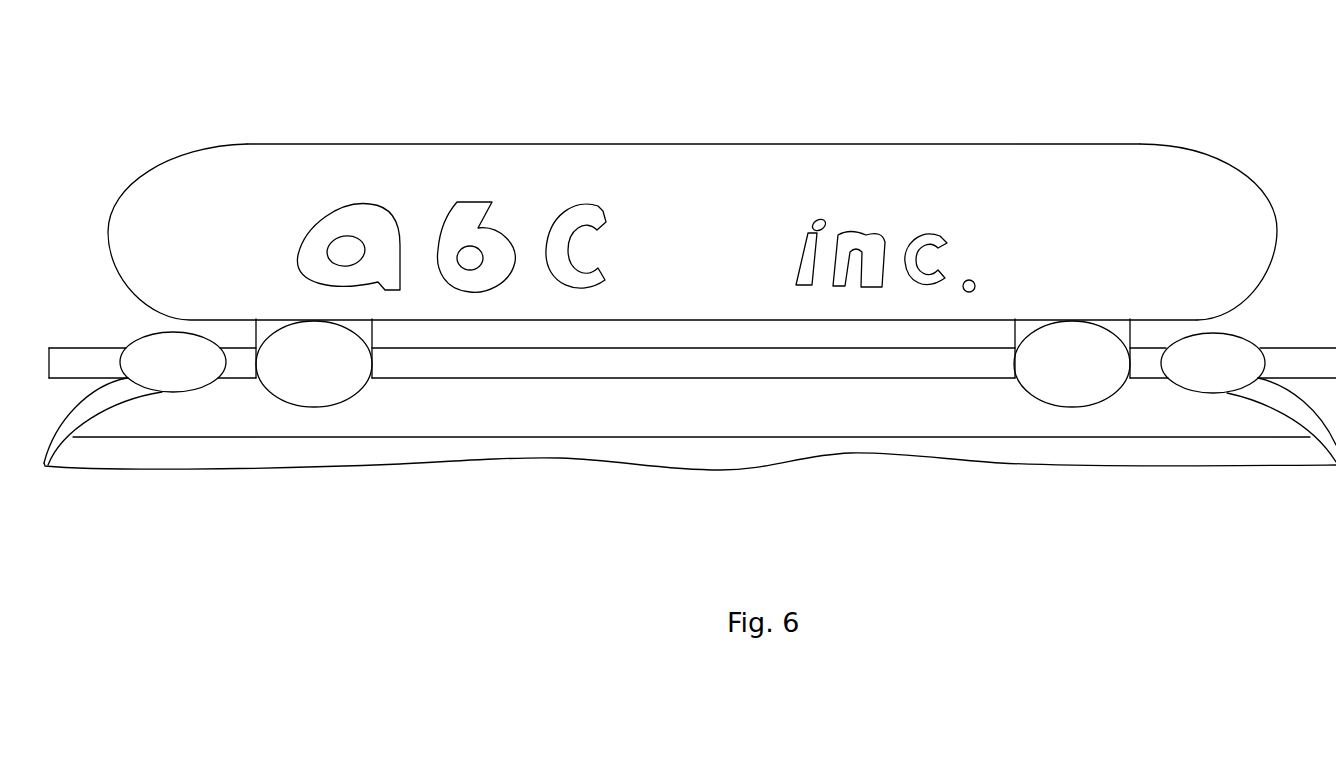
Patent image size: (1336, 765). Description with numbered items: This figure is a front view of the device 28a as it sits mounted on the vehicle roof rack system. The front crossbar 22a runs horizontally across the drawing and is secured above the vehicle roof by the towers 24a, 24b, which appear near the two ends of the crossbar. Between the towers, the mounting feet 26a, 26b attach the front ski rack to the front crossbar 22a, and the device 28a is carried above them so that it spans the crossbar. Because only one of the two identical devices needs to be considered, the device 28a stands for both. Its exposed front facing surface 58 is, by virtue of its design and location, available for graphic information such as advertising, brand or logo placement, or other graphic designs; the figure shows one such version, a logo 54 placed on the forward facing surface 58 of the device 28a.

The front crossbar 22a is at (580, 352).
The tower 24a is at (167, 377).
The tower 24b is at (1220, 378).
The mounting foot 26a is at (313, 378).
The mounting foot 26b is at (1072, 363).
The device 28a is at (709, 133).
The logo 54 is at (463, 202).
The exposed front facing surface 58 is at (1190, 201).